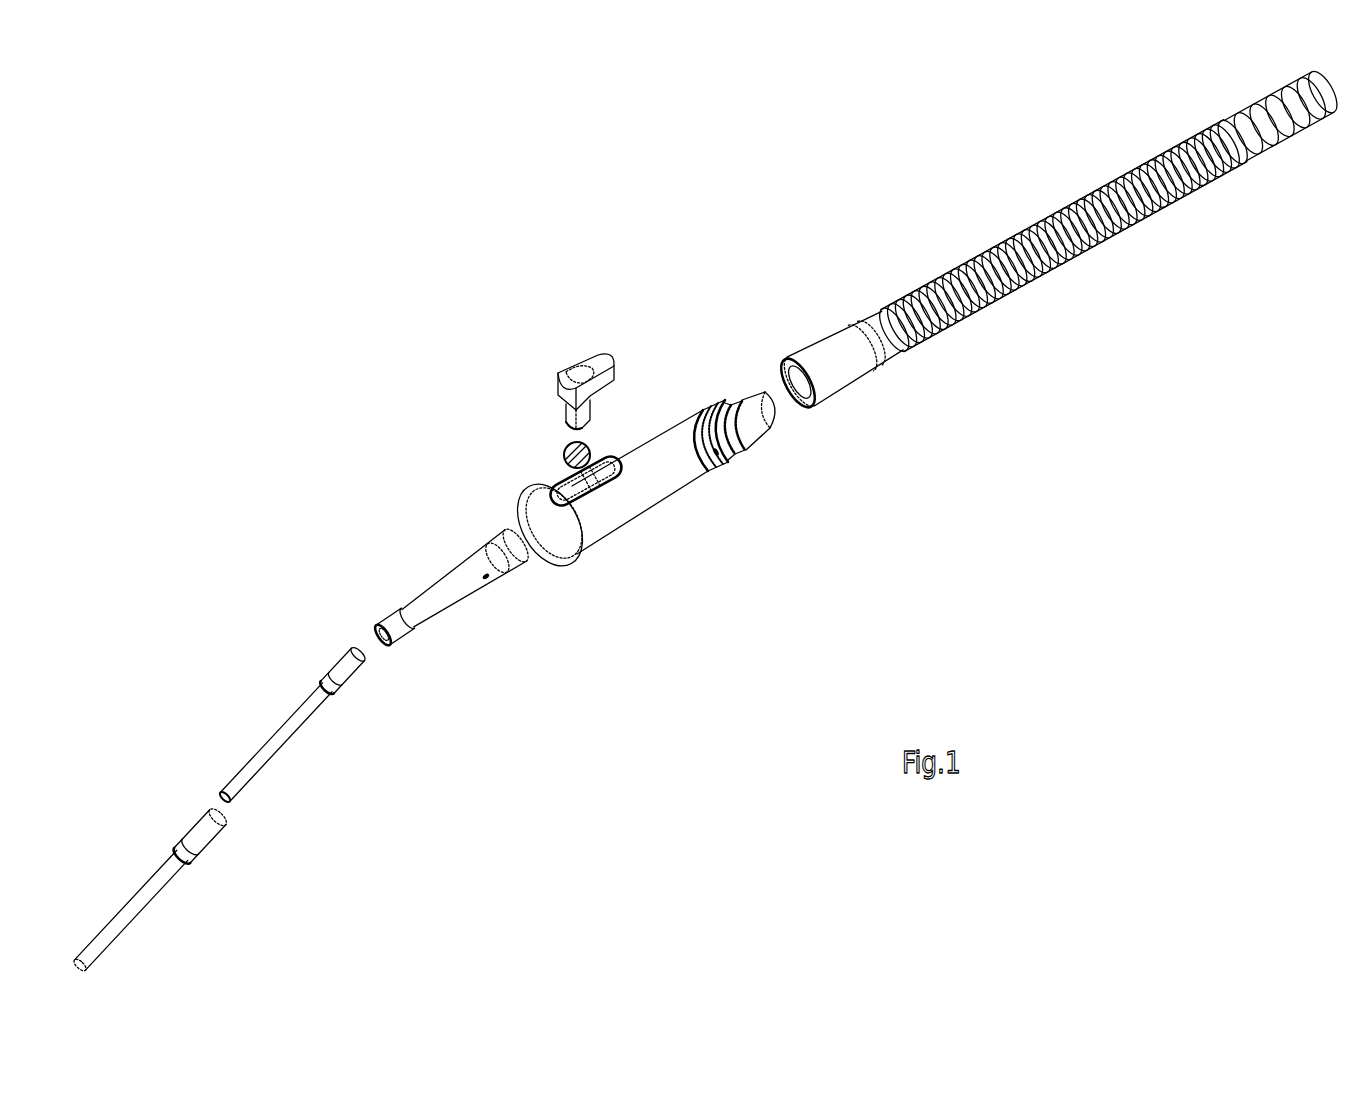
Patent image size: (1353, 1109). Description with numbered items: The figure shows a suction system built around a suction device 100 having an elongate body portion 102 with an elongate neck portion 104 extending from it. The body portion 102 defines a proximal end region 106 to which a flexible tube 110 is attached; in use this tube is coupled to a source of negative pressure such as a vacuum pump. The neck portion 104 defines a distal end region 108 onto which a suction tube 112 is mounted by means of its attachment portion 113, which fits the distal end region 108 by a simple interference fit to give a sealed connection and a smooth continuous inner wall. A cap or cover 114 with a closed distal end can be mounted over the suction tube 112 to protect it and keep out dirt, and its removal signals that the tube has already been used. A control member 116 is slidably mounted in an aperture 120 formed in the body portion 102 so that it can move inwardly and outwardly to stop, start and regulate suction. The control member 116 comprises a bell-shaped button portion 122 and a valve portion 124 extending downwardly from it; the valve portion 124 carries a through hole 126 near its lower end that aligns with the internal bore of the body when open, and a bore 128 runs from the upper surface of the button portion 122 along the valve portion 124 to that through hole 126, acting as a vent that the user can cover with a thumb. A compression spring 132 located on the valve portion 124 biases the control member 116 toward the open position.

The suction device 100 is at (603, 575).
The elongate body portion 102 is at (657, 522).
The elongate neck portion 104 is at (478, 610).
The proximal end region 106 is at (760, 453).
The distal end region 108 is at (367, 600).
The flexible tube 110 is at (920, 228).
The suction tube 112 is at (273, 707).
The attachment portion 113 is at (353, 680).
The cap or cover 114 is at (178, 907).
The control member 116 is at (552, 347).
The aperture 120 is at (607, 457).
The button portion 122 is at (608, 357).
The valve portion 124 is at (565, 408).
The through hole 126 is at (563, 420).
The bore 128 is at (577, 370).
The compression spring 132 is at (565, 455).